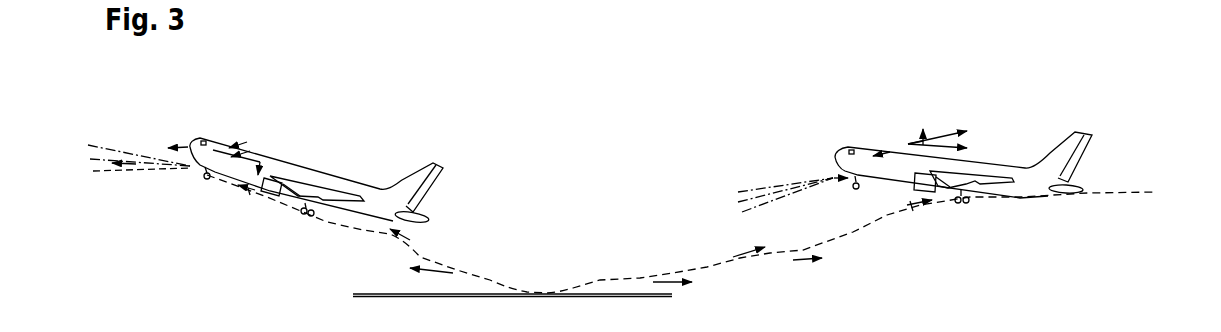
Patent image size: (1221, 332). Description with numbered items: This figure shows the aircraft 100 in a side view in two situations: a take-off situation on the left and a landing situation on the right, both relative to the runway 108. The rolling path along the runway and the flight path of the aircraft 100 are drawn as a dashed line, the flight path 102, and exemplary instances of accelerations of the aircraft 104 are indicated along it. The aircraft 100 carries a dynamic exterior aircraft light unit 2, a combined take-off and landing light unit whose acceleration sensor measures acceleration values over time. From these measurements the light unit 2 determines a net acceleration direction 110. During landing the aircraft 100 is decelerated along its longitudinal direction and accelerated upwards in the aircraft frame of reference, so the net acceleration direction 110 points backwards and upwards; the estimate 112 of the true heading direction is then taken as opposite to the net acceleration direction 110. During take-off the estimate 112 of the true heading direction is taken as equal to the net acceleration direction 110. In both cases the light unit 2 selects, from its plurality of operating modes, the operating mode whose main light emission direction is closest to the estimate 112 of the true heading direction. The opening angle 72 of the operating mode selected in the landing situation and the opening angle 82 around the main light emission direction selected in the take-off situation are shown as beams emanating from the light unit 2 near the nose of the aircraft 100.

The dynamic exterior aircraft light unit 2 is at (203, 171).
The opening angle 72 is at (767, 184).
The opening angle 82 is at (114, 150).
The aircraft 100 is at (327, 168).
The flight path 102 is at (327, 224).
The accelerations of the aircraft 104 is at (249, 194).
The runway 108 is at (647, 297).
The net acceleration direction 110 is at (244, 142).
The estimate of the true heading direction 112 is at (213, 150).